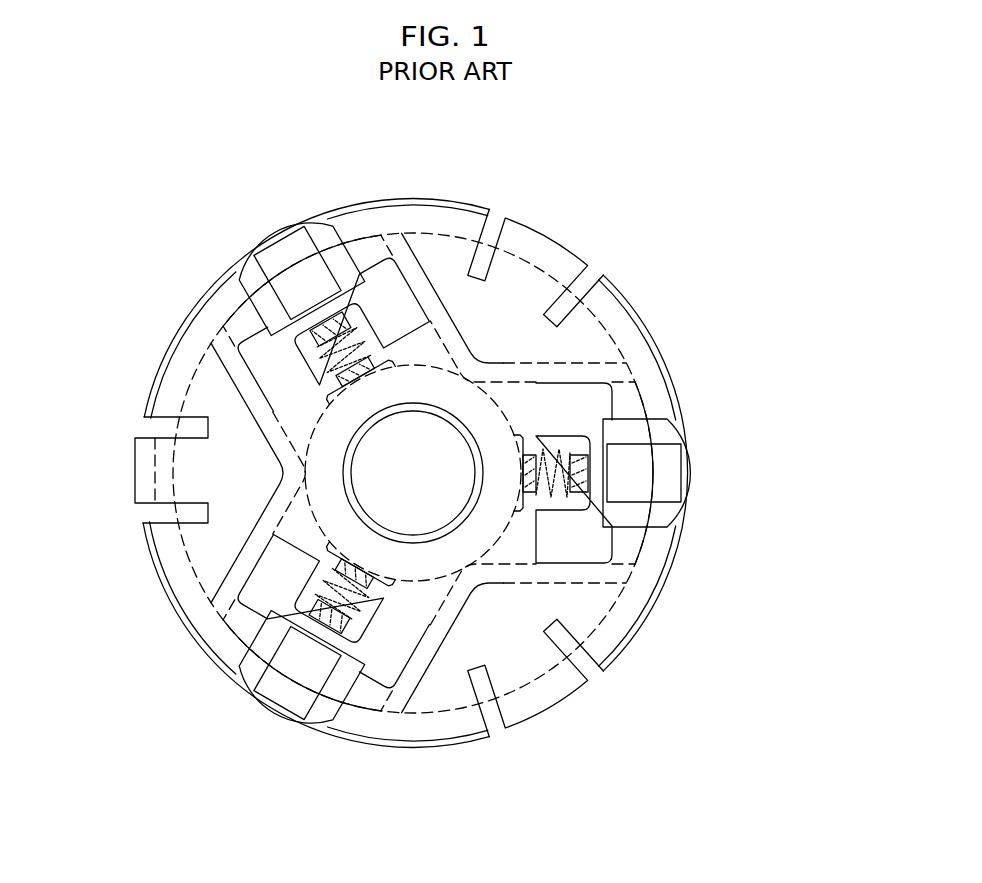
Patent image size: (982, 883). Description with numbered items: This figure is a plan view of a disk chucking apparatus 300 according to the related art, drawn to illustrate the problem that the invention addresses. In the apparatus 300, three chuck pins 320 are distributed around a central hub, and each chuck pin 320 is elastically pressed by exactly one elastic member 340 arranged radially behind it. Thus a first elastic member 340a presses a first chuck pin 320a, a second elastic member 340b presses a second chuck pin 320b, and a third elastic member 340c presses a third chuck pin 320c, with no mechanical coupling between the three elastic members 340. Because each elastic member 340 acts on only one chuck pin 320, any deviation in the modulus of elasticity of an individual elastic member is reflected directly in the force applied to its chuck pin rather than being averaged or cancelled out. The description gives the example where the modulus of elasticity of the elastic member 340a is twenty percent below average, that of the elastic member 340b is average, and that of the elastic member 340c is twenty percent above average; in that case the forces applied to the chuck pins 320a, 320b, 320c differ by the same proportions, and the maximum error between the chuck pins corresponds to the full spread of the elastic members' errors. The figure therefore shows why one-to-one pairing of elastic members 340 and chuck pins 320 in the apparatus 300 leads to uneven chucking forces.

The disk chucking apparatus 300 is at (772, 178).
The chuck pin 320 is at (516, 469).
The chuck pin 320a is at (275, 250).
The chuck pin 320b is at (678, 480).
The chuck pin 320c is at (277, 697).
The elastic member 340 is at (415, 472).
The elastic member 340a is at (317, 353).
The elastic member 340b is at (563, 450).
The elastic member 340c is at (317, 580).